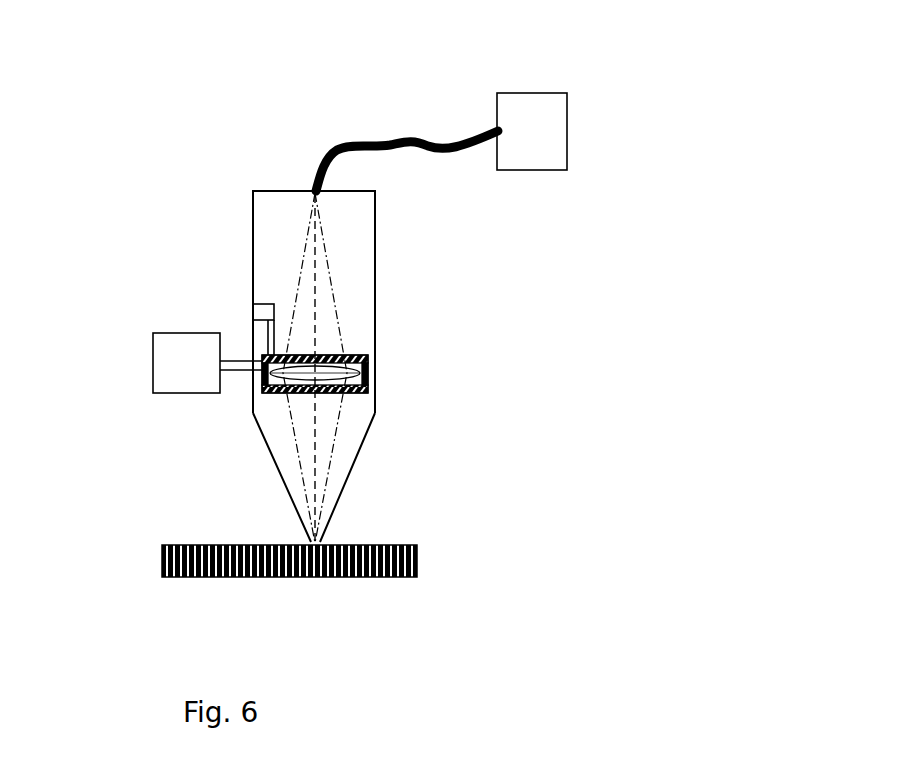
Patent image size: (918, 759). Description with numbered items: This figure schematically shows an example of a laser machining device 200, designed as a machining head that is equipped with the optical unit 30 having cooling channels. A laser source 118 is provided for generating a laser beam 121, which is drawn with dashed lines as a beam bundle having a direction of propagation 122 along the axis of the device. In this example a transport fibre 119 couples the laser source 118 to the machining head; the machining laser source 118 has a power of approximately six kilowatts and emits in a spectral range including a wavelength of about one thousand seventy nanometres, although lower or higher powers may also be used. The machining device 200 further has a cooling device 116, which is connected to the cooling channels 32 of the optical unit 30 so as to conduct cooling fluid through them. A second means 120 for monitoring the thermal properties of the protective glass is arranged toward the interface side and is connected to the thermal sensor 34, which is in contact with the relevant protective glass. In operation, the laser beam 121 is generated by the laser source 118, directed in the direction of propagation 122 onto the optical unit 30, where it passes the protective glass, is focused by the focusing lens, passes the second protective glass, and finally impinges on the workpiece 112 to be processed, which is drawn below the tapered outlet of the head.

The laser machining device 200 is at (232, 355).
The laser source 118 is at (525, 93).
The transport fibre 119 is at (392, 138).
The laser beam 121 is at (323, 241).
The direction of propagation 122 is at (318, 280).
The second means for monitoring thermal properties 120 is at (255, 308).
The thermal sensor 34 is at (253, 331).
The cooling device 116 is at (152, 343).
The cooling channels 32 is at (369, 393).
The optical unit 30 is at (364, 391).
The workpiece 112 is at (417, 562).